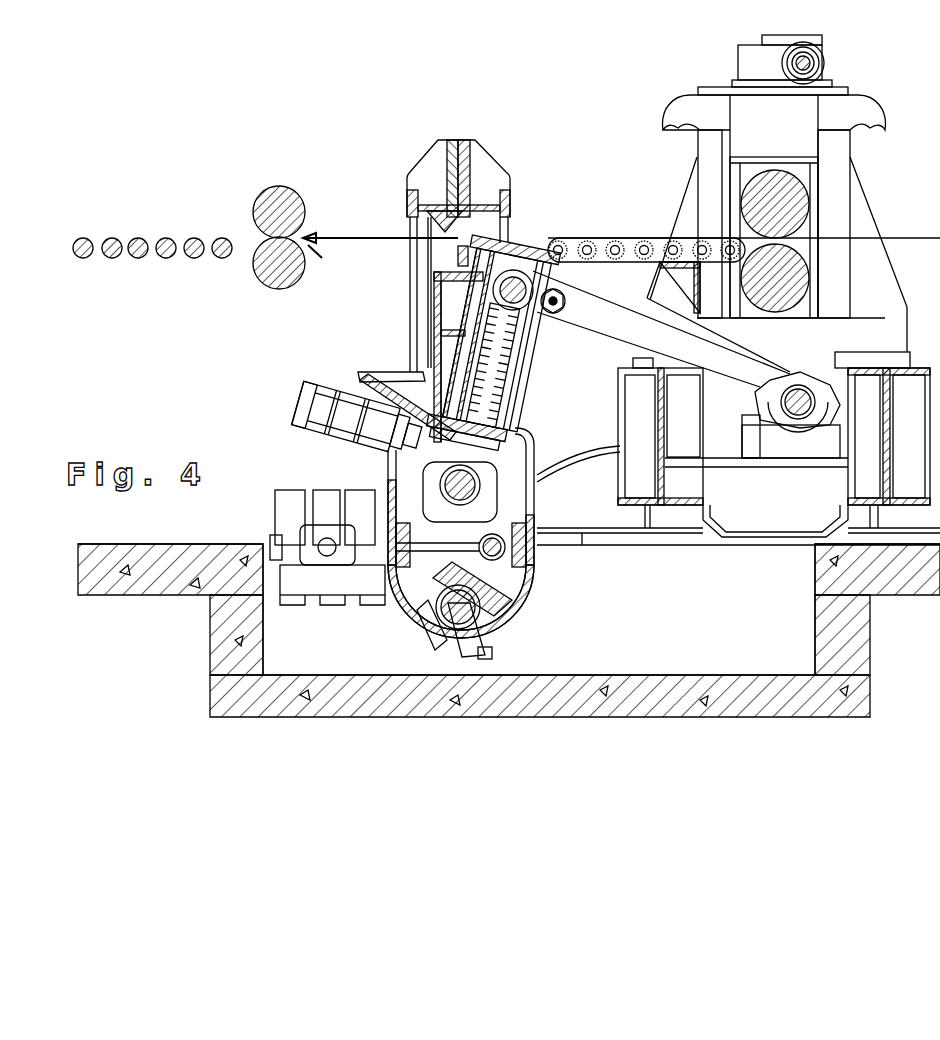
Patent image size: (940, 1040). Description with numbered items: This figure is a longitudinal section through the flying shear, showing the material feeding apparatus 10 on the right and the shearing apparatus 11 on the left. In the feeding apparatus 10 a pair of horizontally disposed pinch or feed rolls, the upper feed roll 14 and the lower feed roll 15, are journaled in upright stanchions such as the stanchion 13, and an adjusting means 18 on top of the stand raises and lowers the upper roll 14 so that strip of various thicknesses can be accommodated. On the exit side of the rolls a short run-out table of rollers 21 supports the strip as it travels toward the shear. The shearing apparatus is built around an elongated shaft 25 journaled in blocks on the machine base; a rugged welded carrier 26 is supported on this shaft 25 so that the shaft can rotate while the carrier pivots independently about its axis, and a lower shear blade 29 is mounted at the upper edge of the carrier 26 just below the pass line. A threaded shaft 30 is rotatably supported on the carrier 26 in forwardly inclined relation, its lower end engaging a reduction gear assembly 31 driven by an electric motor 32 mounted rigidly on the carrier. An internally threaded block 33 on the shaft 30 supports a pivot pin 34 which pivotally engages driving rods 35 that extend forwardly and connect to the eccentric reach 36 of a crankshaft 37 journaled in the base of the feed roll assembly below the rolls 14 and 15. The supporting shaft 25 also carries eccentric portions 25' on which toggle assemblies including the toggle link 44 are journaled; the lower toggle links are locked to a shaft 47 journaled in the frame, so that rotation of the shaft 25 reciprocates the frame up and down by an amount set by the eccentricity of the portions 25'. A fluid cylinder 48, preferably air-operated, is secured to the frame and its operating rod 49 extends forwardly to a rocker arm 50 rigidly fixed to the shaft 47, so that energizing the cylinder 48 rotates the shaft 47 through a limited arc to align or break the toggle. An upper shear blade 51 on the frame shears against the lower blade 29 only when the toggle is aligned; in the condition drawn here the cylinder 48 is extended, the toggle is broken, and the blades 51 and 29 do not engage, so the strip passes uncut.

The material feeding apparatus 10 is at (888, 303).
The shearing apparatus 11 is at (491, 191).
The stanchion 13 is at (858, 213).
The upper feed roll 14 is at (780, 180).
The lower feed roll 15 is at (790, 270).
The adjusting means 18 is at (812, 70).
The rollers 21 is at (585, 238).
The shaft 25 is at (502, 492).
The eccentric portions 25' is at (457, 552).
The carrier 26 is at (434, 303).
The shear blade 29 is at (458, 252).
The threaded shaft 30 is at (497, 391).
The reduction gear assembly 31 is at (492, 441).
The electric motor 32 is at (303, 412).
The internally threaded blocks 33 is at (540, 277).
The pivot pin 34 is at (530, 322).
The driving rods 35 is at (722, 350).
The eccentric reach 36 is at (758, 404).
The crankshaft 37 is at (790, 452).
The toggle link 44 is at (505, 520).
The shaft 47 is at (440, 645).
The fluid cylinder 48 is at (292, 505).
The operating rod 49 is at (522, 597).
The rocker arm 50 is at (497, 640).
The shear blade 51 is at (427, 218).